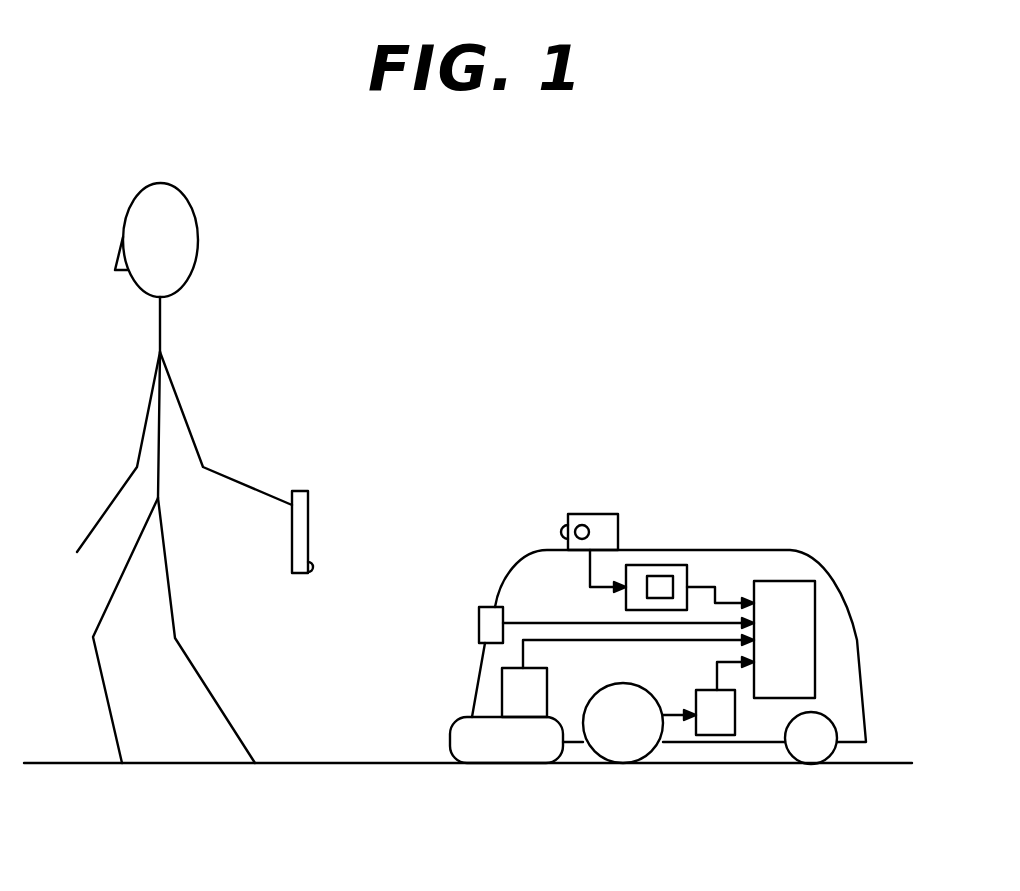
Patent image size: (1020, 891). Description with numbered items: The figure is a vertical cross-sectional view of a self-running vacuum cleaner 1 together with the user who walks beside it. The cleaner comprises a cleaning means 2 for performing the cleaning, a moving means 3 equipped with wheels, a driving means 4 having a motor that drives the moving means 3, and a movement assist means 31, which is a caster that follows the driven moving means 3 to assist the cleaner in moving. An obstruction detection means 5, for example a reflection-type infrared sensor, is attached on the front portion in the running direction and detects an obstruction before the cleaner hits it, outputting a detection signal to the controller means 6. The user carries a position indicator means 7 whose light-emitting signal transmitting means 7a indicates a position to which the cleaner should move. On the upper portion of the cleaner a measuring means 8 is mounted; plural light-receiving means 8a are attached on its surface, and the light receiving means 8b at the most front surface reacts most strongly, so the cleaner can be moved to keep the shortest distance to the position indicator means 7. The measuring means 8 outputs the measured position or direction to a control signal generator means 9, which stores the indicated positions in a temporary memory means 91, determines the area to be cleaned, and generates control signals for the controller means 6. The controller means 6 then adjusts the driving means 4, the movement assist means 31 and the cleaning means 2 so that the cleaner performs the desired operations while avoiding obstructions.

The self-running vacuum cleaner 1 is at (788, 550).
The cleaning means 2 is at (518, 757).
The moving means 3 is at (622, 757).
The movement assist means 31 is at (808, 757).
The driving means 4 is at (720, 728).
The obstruction detection means 5 is at (479, 630).
The controller means 6 is at (805, 630).
The position indicator means 7 is at (309, 497).
The signal transmitting means 7a is at (313, 569).
The measuring means 8 is at (600, 514).
The light-receiving means 8a is at (577, 526).
The light receiving means at the front surface 8b is at (561, 532).
The control signal generator means 9 is at (638, 570).
The temporary memory means 91 is at (667, 578).